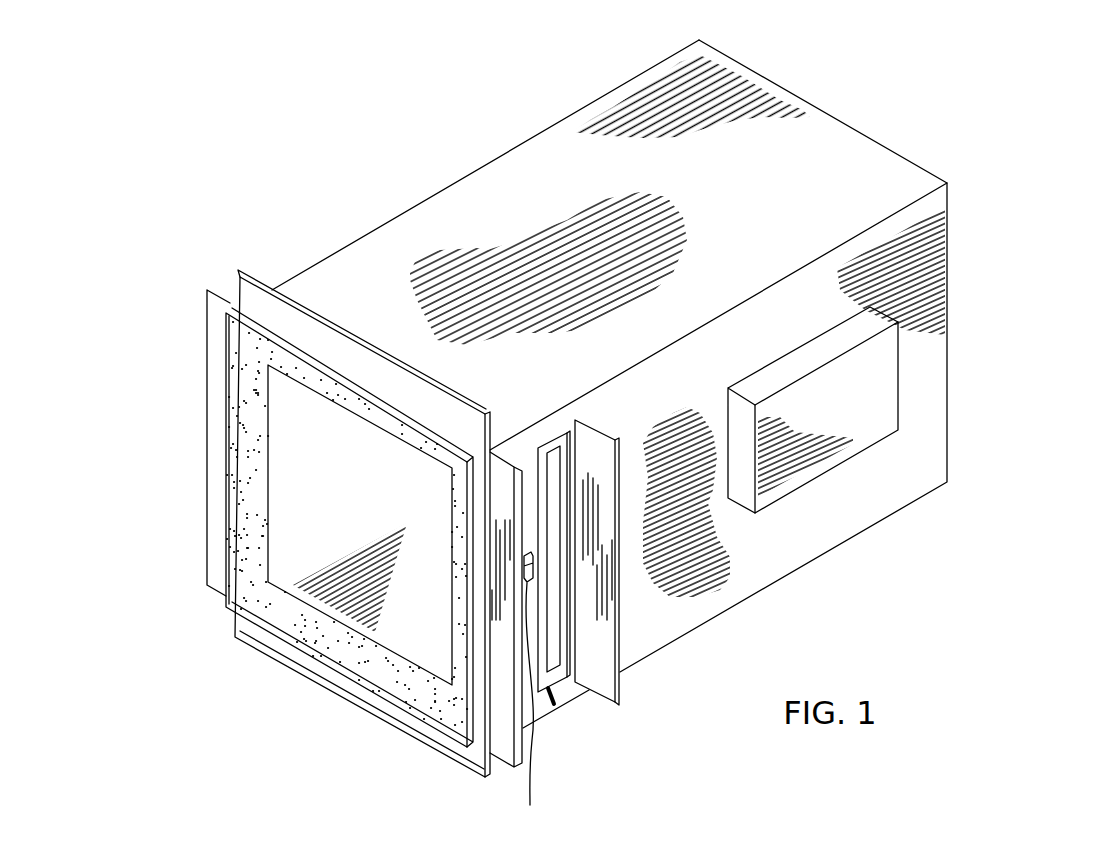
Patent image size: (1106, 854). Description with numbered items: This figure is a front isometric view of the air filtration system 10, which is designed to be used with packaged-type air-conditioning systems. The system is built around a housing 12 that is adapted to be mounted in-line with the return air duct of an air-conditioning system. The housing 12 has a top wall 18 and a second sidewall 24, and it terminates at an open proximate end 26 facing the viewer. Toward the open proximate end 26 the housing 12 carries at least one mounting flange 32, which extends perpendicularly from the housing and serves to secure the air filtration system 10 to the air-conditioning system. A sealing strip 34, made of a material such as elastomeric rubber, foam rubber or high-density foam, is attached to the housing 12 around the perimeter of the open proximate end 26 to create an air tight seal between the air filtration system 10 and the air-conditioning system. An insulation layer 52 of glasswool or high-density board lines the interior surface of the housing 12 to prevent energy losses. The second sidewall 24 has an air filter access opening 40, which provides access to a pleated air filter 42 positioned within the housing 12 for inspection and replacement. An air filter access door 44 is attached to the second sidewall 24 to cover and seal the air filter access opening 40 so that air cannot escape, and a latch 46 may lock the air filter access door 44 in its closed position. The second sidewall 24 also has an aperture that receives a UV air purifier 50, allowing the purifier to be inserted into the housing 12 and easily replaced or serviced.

The air filtration system 10 is at (388, 126).
The housing 12 is at (890, 133).
The top wall 18 is at (370, 265).
The second sidewall 24 is at (867, 500).
The open proximate end 26 is at (316, 531).
The mounting flange 32 is at (240, 290).
The sealing strip 34 is at (226, 530).
The air filter access opening 40 is at (553, 703).
The pleated air filter 42 is at (560, 677).
The air filter access door 44 is at (618, 618).
The latch 46 is at (523, 700).
The UV air purifier 50 is at (867, 400).
The insulation layer 52 is at (250, 432).